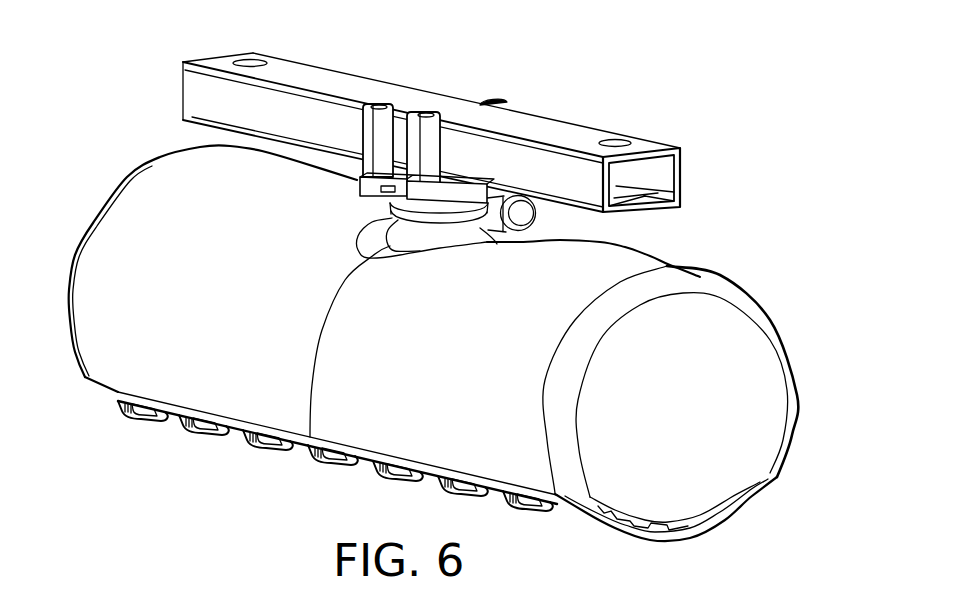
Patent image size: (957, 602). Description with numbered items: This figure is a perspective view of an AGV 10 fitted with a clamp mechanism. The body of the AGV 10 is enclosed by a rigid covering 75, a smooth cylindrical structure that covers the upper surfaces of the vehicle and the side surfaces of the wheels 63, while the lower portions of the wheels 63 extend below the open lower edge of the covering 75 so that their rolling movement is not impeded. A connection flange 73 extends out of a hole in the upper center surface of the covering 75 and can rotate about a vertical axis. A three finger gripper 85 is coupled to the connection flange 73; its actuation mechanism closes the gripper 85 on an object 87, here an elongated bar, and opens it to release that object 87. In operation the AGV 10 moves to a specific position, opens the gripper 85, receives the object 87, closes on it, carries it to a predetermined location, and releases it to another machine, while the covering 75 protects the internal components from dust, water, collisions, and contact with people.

The AGV 10 is at (700, 250).
The wheels 63 is at (605, 528).
The connection flange 73 is at (360, 208).
The rigid covering 75 is at (136, 190).
The three finger gripper 85 is at (375, 100).
The object 87 is at (553, 127).